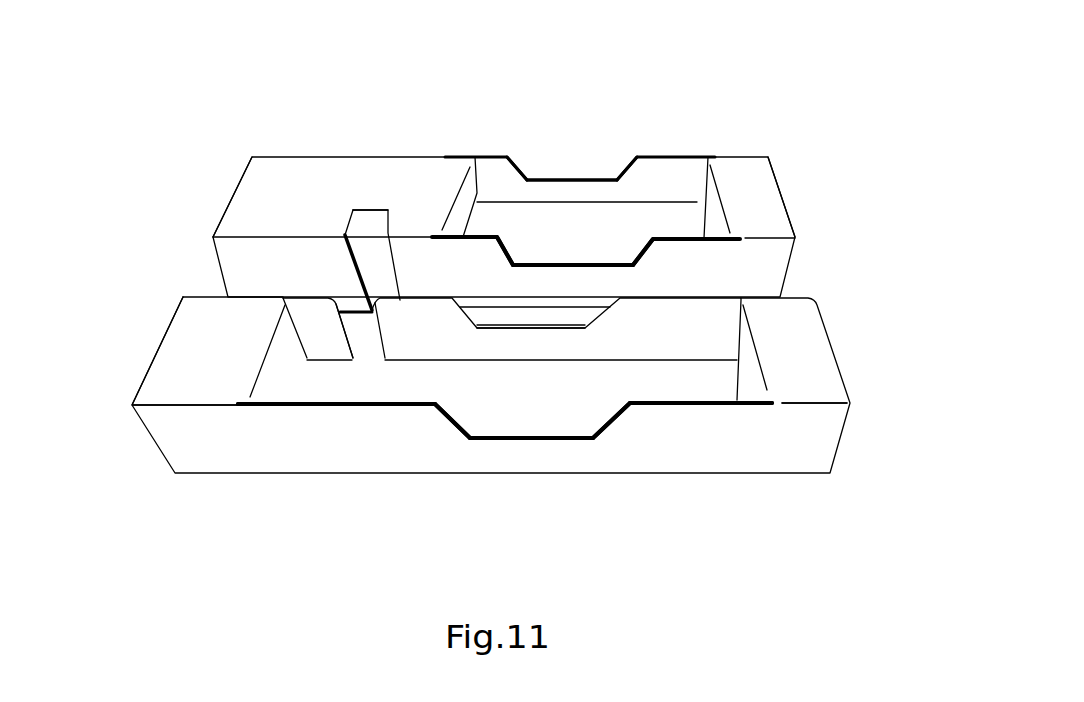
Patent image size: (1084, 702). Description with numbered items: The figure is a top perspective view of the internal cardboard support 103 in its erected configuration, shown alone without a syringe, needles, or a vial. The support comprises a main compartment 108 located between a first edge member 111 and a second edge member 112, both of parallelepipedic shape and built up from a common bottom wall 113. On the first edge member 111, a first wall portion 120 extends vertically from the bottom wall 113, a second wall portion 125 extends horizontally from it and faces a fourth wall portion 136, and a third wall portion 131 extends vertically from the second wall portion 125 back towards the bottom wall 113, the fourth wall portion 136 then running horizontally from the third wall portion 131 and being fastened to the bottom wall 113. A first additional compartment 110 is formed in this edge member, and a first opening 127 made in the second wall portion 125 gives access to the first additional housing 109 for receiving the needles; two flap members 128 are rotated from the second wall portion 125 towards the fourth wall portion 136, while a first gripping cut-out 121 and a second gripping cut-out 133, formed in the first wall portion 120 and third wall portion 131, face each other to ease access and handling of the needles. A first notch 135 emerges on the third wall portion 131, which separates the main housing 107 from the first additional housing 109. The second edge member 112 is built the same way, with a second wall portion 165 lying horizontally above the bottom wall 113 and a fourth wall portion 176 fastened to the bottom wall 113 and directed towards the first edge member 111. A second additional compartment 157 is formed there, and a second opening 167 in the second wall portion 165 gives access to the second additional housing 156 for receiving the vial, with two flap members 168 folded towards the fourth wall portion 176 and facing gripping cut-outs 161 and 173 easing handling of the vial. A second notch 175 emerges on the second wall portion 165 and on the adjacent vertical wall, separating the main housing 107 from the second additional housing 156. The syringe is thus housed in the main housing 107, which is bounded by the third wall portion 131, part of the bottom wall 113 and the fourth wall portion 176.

The internal cardboard support 103 is at (190, 112).
The main housing 107 is at (760, 255).
The main compartment 108 is at (205, 284).
The first additional housing 109 is at (419, 396).
The first additional compartment 110 is at (680, 383).
The first edge member 111 is at (162, 335).
The second edge member 112 is at (232, 193).
The bottom wall 113 is at (638, 230).
The first wall portion 120 is at (177, 438).
The first gripping cut-out 121 is at (523, 437).
The second wall portion 125 is at (233, 363).
The first opening 127 is at (596, 386).
The flap members 128 is at (278, 373).
The third wall portion 131 is at (683, 345).
The second gripping cut-out 133 is at (503, 332).
The first notch 135 is at (366, 361).
The fourth wall portion 136 is at (550, 414).
The second additional housing 156 is at (650, 244).
The second additional compartment 157 is at (677, 228).
The first gripping cut-out 161 is at (577, 178).
The second wall portion 165 is at (443, 172).
The second opening 167 is at (522, 224).
The flap members 168 is at (478, 196).
The second gripping cut-out 173 is at (582, 268).
The second notch 175 is at (370, 212).
The fourth wall portion 176 is at (362, 333).